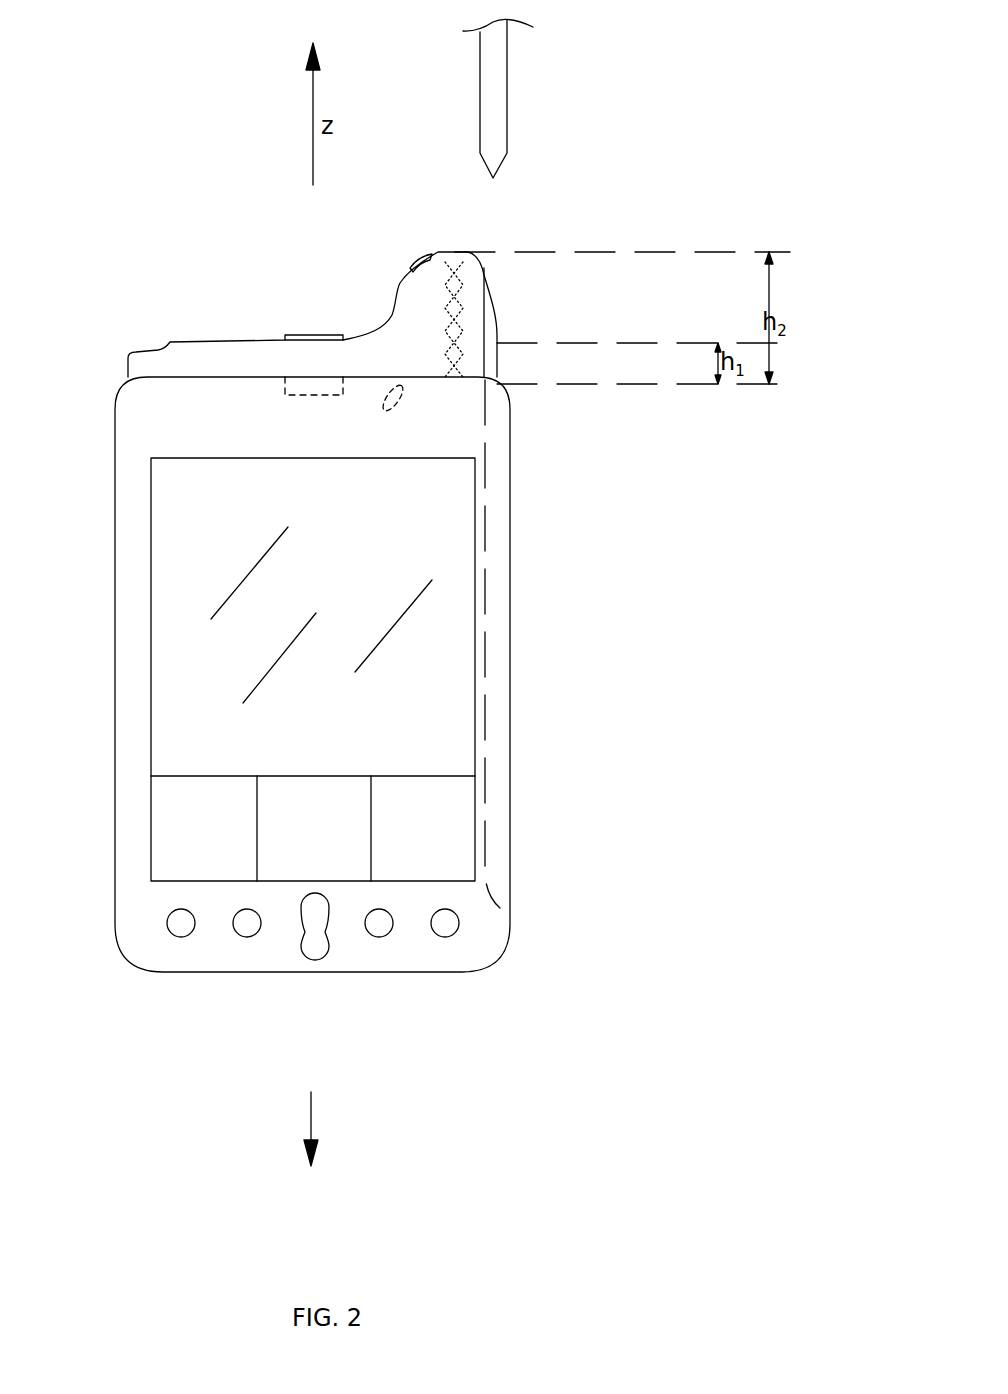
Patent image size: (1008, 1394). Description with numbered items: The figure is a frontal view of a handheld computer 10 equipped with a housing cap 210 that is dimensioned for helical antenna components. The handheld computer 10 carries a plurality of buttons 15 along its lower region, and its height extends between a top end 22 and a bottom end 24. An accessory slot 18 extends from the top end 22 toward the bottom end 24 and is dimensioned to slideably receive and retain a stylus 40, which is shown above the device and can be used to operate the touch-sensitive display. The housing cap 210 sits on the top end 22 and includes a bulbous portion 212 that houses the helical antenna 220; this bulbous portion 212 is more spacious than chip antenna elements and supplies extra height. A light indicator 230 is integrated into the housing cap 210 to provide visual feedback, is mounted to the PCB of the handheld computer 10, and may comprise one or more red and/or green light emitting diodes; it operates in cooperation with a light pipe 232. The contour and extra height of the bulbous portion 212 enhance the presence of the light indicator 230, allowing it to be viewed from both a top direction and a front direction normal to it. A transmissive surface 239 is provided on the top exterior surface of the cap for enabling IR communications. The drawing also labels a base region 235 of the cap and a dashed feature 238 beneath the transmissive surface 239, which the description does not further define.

The handheld computer 10 is at (379, 696).
The buttons 15 is at (445, 937).
The accessory slot 18 is at (512, 612).
The top end 22 is at (497, 372).
The bottom end 24 is at (462, 972).
The stylus 40 is at (500, 80).
The housing cap 210 is at (352, 467).
The bulbous portion 212 is at (420, 240).
The helical antenna 220 is at (460, 287).
The light indicator 230 is at (405, 250).
The light pipe 232 is at (400, 397).
The base portion 235 is at (238, 355).
The infrared port 238 is at (285, 392).
The transmissive surface 239 is at (290, 337).